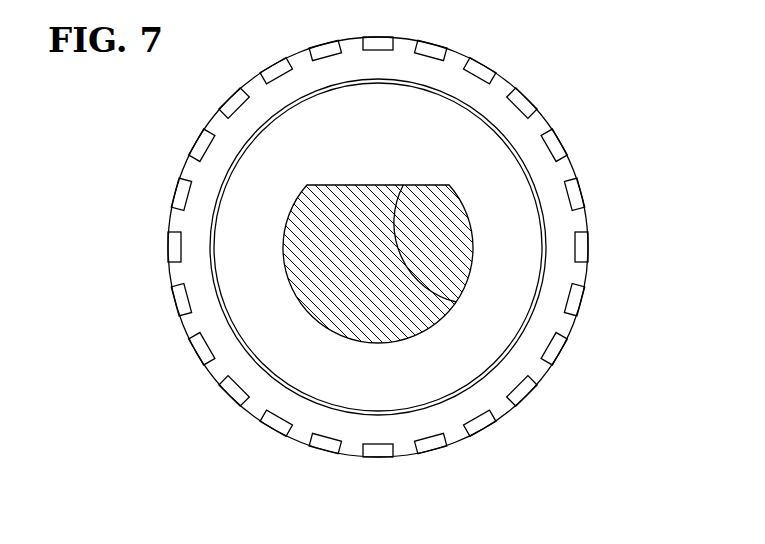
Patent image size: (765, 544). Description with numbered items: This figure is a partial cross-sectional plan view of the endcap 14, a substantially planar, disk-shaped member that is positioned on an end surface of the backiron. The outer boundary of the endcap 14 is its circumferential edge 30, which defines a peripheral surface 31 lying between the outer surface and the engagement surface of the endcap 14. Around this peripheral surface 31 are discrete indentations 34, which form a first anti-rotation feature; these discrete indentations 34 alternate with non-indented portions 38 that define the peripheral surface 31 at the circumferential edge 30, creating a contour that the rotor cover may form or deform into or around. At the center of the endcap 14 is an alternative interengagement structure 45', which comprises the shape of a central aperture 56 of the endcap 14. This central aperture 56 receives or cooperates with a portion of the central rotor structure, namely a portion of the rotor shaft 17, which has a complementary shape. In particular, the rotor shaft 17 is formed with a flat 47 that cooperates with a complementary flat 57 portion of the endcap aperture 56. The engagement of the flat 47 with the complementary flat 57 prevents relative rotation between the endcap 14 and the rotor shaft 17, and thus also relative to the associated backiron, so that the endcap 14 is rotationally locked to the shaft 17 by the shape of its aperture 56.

The endcap 14 is at (443, 247).
The rotor shaft 17 is at (323, 292).
The circumferential edge 30 is at (422, 247).
The peripheral surface 31 is at (533, 127).
The discrete indentations 34 is at (583, 247).
The non-indented portions 38 is at (422, 247).
The alternative interengagement structure 45' is at (374, 203).
The flat 47 is at (367, 185).
The central aperture 56 is at (297, 200).
The complementary flat portion 57 is at (450, 300).